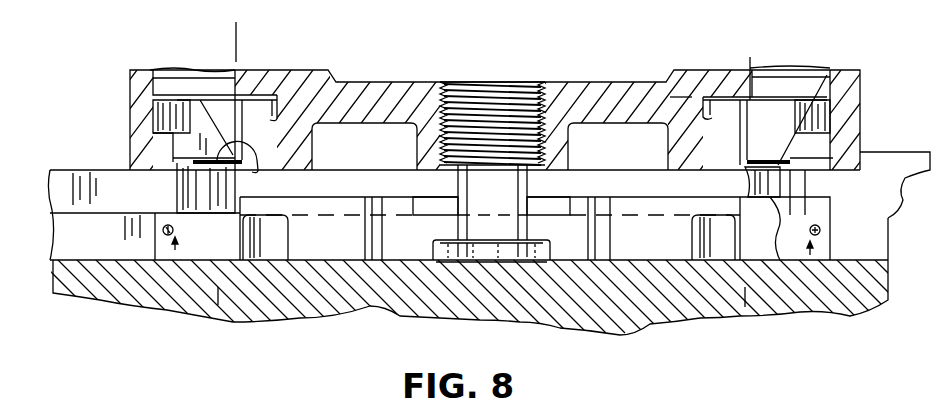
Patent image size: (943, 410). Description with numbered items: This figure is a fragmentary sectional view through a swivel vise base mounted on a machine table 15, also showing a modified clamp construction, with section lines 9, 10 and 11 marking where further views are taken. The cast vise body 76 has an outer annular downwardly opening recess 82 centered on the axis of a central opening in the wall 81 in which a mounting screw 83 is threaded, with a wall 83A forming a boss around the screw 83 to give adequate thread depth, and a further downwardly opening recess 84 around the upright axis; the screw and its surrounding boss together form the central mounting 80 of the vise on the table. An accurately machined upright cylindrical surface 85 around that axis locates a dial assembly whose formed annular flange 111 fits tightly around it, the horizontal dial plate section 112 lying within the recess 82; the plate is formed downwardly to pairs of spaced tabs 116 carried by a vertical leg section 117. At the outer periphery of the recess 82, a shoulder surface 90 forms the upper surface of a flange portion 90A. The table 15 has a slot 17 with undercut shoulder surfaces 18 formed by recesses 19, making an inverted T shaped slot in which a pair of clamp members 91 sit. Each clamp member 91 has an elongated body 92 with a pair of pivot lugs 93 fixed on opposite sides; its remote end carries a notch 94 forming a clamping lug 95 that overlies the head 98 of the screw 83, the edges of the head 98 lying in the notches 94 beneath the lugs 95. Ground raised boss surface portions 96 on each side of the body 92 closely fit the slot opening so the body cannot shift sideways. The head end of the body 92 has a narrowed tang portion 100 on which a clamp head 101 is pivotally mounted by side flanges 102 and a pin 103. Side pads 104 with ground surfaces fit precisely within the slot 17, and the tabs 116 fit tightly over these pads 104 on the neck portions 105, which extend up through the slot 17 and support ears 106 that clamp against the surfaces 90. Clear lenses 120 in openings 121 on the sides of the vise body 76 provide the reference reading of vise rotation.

The section line 9- 9 is at (237, 40).
The section line 10- 10 is at (750, 63).
The section line 11- 11 is at (680, 97).
The table 15 is at (372, 290).
The slot 17 is at (67, 245).
The undercut shoulder surfaces 18 is at (102, 215).
The recesses 19 is at (82, 232).
The vise body 76 is at (605, 100).
The bolt 80 is at (492, 60).
The wall 81 is at (390, 93).
The annular recess 82 is at (705, 110).
The mounting screw 83 is at (497, 103).
The wall 83A is at (549, 157).
The recess 84 is at (380, 133).
The cylindrical surface 85 is at (300, 108).
The shoulder surface 90 is at (173, 140).
The flange portion 90A is at (168, 153).
The clamp members 91 is at (350, 180).
The elongated body 92 is at (338, 247).
The pivot lugs 93 is at (270, 225).
The notch 94 is at (437, 258).
The clamping lug 95 is at (448, 227).
The ground raised boss surface portion 96 is at (447, 203).
The head 98 is at (492, 250).
The tang portion 100 is at (760, 240).
The clamp head 101 is at (176, 252).
The side flanges 102 is at (207, 237).
The pin 103 is at (162, 233).
The side pads 104 is at (190, 182).
The neck portion 105 is at (788, 125).
The ears 106 is at (173, 117).
The annular flange 111 is at (265, 102).
The dial plate section 112 is at (240, 94).
The tabs 116 is at (258, 170).
The vertical leg section 117 is at (738, 125).
The lenses 120 is at (193, 70).
The openings 121 is at (165, 88).